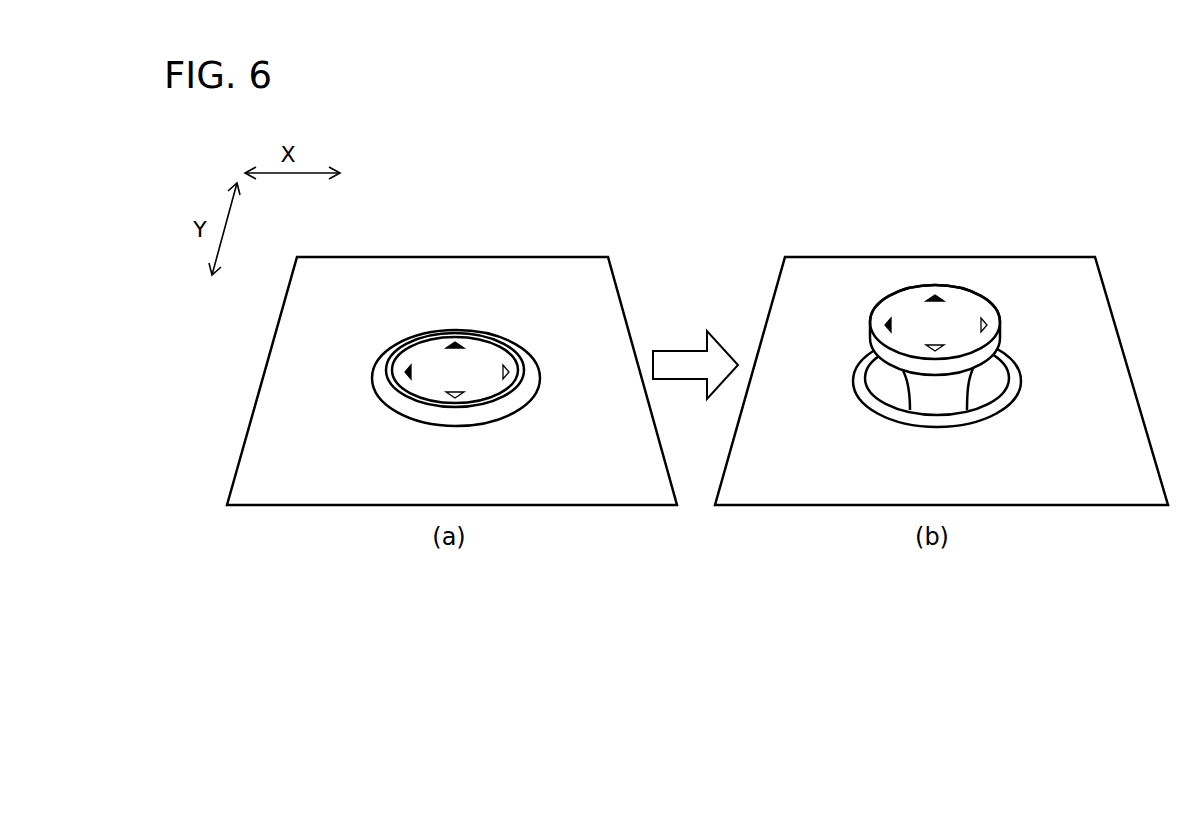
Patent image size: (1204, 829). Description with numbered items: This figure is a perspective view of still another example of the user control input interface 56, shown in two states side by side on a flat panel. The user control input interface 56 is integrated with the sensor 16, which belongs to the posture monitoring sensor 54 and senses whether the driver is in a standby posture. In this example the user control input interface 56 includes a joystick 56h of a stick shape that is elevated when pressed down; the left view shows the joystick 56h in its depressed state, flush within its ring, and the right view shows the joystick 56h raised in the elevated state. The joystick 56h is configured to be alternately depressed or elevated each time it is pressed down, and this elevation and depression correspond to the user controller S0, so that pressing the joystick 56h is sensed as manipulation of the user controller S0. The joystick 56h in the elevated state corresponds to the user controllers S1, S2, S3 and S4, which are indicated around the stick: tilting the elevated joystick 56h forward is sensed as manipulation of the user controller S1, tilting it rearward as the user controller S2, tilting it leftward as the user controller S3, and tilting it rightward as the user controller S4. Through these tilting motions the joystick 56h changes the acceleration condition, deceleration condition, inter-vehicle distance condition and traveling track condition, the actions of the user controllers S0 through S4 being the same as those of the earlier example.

The sensor 16 is at (357, 450).
The posture monitoring sensor 54 is at (580, 453).
The user control input interface 56 is at (452, 183).
The joystick 56h is at (483, 387).
The user controller S0 is at (696, 346).
The user controller S1 is at (456, 310).
The user controller S2 is at (695, 444).
The user controller S3 is at (587, 373).
The user controller S4 is at (804, 373).